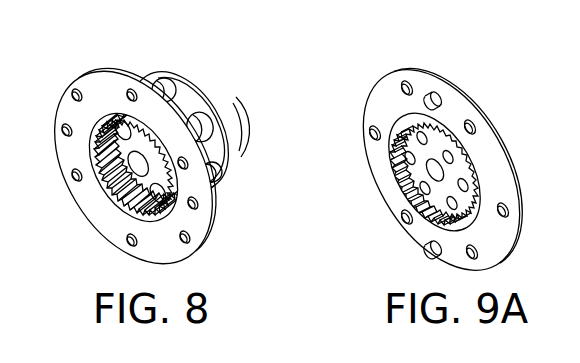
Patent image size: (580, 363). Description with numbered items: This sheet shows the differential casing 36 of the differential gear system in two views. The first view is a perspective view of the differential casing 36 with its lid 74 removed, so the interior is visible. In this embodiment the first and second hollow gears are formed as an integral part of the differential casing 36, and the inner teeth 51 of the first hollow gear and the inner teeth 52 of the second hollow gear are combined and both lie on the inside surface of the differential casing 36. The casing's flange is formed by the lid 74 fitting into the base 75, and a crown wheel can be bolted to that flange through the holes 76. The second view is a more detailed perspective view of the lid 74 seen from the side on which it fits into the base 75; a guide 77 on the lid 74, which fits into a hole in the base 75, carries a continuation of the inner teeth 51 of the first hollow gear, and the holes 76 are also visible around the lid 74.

In FIG. 8, the differential casing 36 is at (180, 72).
In FIG. 8, the inner teeth 51 is at (97, 159).
In FIG. 9A, the inner teeth 51 is at (393, 173).
In FIG. 8, the inner teeth 52 is at (203, 191).
In FIG. 9A, the lid 74 is at (380, 119).
In FIG. 8, the base 75 is at (97, 104).
In FIG. 8, the holes 76 is at (121, 72).
In FIG. 9A, the holes 76 is at (475, 103).
In FIG. 9A, the guide 77 is at (467, 158).